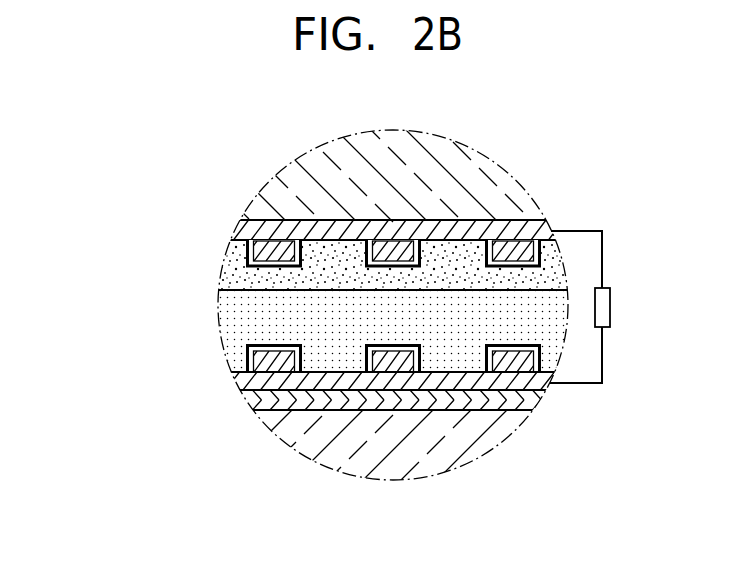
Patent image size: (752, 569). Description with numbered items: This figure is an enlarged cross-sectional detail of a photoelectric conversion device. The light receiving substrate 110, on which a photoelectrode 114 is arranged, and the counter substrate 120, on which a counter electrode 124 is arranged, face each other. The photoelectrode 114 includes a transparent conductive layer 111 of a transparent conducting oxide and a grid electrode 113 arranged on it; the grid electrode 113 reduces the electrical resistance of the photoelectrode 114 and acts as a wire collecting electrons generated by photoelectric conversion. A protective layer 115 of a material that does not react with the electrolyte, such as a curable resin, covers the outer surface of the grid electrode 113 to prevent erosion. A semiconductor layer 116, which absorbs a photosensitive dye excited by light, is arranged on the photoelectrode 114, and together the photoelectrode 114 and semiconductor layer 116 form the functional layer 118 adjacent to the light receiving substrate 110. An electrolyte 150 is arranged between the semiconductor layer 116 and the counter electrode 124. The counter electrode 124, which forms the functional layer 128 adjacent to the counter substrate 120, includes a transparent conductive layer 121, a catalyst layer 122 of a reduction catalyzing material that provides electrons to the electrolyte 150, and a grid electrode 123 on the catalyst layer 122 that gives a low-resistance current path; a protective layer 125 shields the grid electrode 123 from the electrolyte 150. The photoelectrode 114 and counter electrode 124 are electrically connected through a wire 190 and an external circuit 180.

The light receiving substrate 110 is at (503, 182).
The transparent conductive layer 111 is at (241, 228).
The grid electrode 113 is at (242, 243).
The photoelectrode 114 is at (341, 216).
The protective layer 115 is at (244, 266).
The semiconductor layer 116 is at (240, 281).
The functional layer 118 is at (314, 241).
The counter substrate 120 is at (483, 437).
The transparent conductive layer 121 is at (262, 402).
The catalyst layer 122 is at (244, 391).
The grid electrode 123 is at (243, 380).
The counter electrode 124 is at (341, 398).
The protective layer 125 is at (247, 345).
The functional layer 128 is at (314, 384).
The electrolyte 150 is at (342, 348).
The external circuit 180 is at (610, 308).
The wire 190 is at (587, 231).